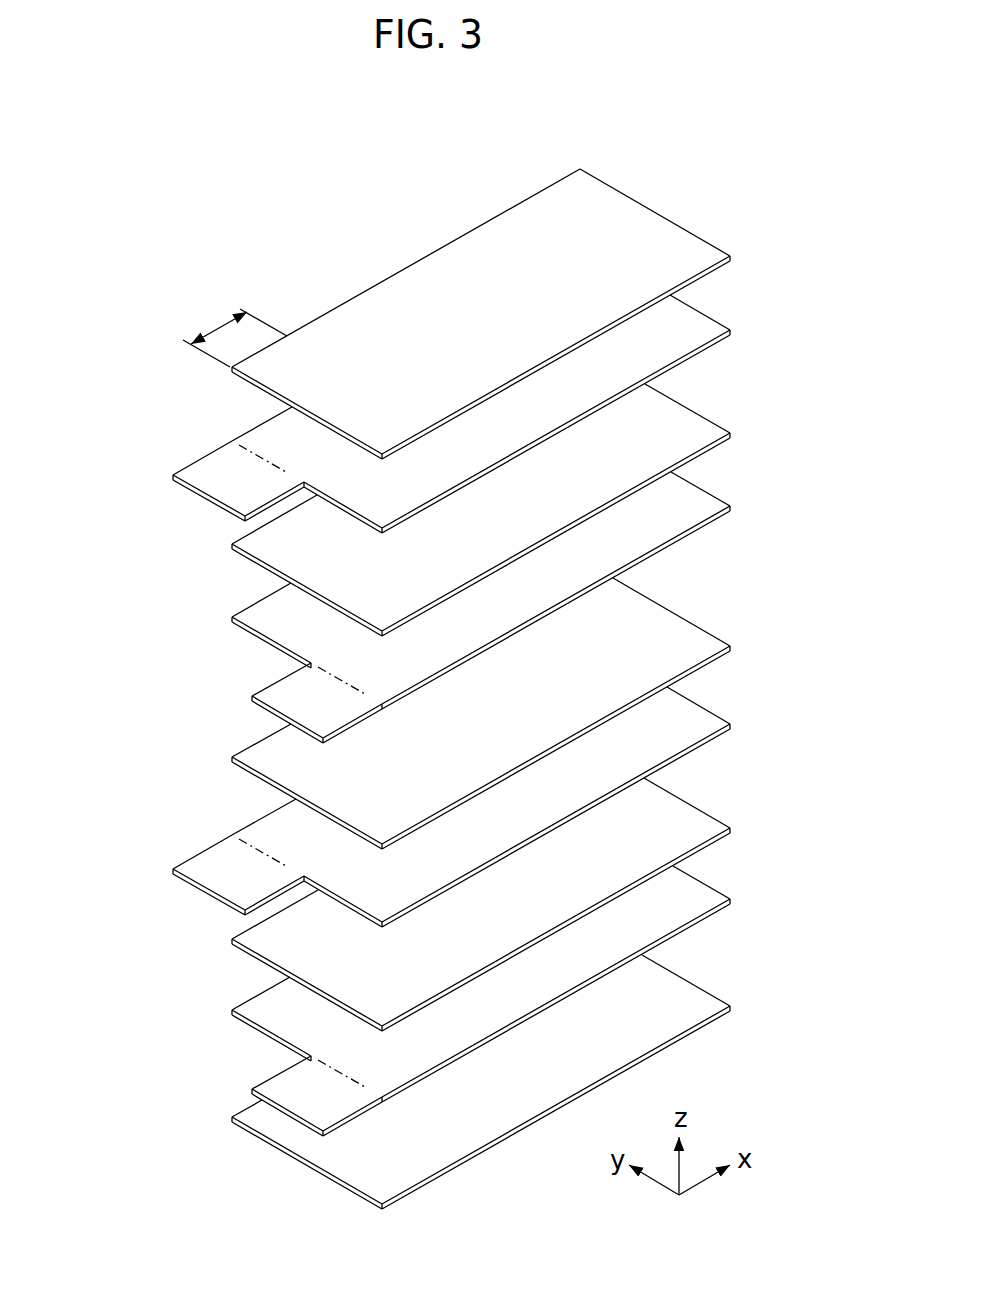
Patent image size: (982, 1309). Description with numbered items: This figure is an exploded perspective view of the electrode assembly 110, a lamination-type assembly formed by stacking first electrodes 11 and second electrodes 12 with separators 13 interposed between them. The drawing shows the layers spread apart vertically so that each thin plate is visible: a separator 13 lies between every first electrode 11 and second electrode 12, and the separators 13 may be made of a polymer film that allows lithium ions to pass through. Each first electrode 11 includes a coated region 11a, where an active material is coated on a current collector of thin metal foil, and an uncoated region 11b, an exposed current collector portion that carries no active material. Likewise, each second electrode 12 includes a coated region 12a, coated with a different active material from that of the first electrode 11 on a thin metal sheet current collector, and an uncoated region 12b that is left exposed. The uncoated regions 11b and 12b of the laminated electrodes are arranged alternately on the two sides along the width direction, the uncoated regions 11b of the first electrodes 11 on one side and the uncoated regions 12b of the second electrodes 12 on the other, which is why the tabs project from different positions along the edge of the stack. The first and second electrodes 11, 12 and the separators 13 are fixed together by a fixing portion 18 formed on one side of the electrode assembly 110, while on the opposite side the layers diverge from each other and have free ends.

The electrode assembly 110 is at (443, 150).
The first electrode 11 is at (421, 804).
The coated region 11a is at (333, 632).
The uncoated region 11b is at (286, 697).
The second electrode 12 is at (391, 619).
The coated region 12a is at (264, 434).
The uncoated region 12b is at (205, 468).
The separator 13 is at (243, 558).
The fixing portion 18 is at (235, 329).